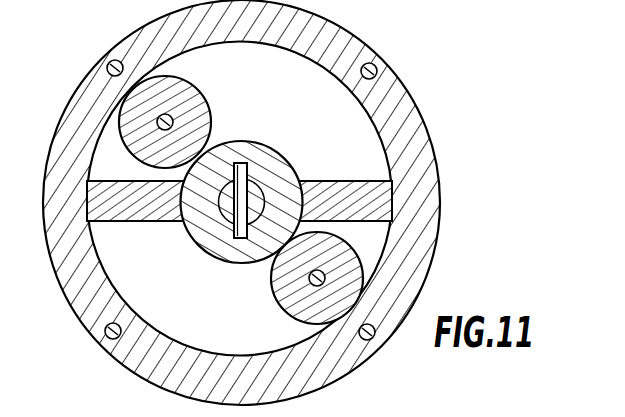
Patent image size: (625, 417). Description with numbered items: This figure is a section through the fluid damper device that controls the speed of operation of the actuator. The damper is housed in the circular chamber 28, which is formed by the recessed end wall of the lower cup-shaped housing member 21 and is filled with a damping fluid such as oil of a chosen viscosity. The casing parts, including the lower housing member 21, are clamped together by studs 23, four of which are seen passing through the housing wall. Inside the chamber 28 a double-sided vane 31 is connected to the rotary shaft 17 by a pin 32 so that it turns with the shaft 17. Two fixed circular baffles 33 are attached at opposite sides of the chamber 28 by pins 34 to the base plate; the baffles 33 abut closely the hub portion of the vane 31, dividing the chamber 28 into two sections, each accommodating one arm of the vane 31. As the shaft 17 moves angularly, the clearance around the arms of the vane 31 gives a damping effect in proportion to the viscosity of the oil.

The rotary shaft 17 is at (227, 208).
The lower cup-shaped housing member 21 is at (398, 127).
The studs 23 is at (112, 66).
The chamber 28 is at (360, 158).
The double-sided vane 31 is at (147, 208).
The pin 32 is at (244, 166).
The fixed circular baffles 33 is at (188, 99).
The pins 34 is at (173, 122).